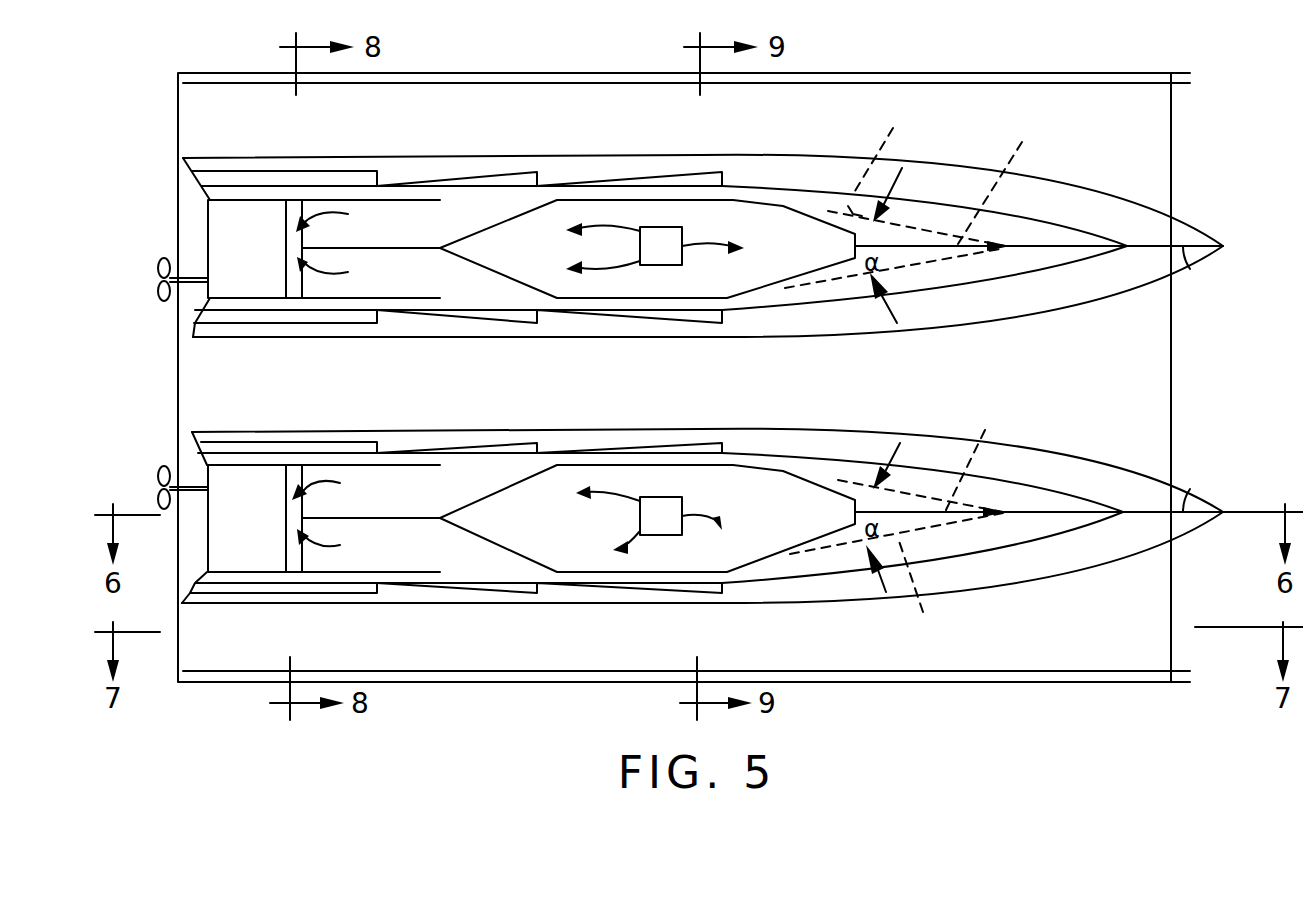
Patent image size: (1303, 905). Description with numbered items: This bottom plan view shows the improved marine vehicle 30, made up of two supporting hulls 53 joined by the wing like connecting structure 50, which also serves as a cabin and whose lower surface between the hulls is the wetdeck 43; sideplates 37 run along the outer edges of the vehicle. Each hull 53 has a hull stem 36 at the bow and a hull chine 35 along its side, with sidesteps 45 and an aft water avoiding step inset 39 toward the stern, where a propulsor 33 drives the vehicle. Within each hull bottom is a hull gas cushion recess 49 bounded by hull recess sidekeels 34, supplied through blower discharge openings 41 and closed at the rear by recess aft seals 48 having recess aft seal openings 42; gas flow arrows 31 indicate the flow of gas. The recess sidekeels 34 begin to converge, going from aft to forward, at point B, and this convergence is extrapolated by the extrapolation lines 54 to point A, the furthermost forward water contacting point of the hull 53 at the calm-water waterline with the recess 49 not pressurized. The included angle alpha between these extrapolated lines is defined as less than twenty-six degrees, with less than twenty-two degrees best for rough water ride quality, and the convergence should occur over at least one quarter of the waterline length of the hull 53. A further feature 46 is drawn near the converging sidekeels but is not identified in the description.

The marine vehicle 30 is at (1172, 170).
The gas flow arrows 31 is at (342, 216).
The propulsor 33 is at (160, 302).
The hull recess sidekeel 34 is at (588, 192).
The hull chine 35 is at (938, 200).
The hull stem 36 is at (1183, 252).
The sideplates 37 is at (945, 72).
The aft water avoiding step inset 39 is at (327, 171).
The blower discharge openings 41 is at (682, 233).
The recess aft seal openings 42 is at (307, 284).
The wetdeck 43 is at (843, 398).
The sidesteps 45 is at (478, 178).
The section line 46 is at (895, 375).
The recess aft seals 48 is at (225, 266).
The hull gas cushion recesses 49 is at (776, 265).
The wing like connecting structure 50 is at (1103, 390).
The supporting hull 53 is at (1060, 177).
The extrapolation lines 54 is at (1005, 315).
The point A is at (1010, 250).
The point B is at (720, 298).